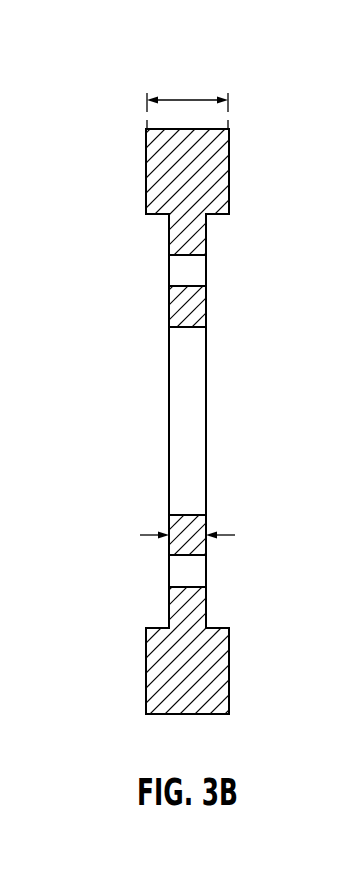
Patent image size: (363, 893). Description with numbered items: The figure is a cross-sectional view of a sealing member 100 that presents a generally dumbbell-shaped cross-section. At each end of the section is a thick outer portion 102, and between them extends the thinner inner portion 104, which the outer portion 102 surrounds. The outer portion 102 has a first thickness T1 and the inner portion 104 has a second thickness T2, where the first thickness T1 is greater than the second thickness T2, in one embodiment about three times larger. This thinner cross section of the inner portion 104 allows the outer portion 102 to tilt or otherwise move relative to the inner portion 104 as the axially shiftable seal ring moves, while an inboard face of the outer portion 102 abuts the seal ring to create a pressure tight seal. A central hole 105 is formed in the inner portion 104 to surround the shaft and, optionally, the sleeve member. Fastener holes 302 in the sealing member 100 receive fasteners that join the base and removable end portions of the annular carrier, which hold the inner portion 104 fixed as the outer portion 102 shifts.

The sealing member 100 is at (243, 252).
The outer portion 102 is at (146, 180).
The inner portion 104 is at (169, 240).
The central hole 105 is at (169, 425).
The fastener holes 302 is at (169, 270).
The first thickness T1 is at (188, 98).
The second thickness T2 is at (225, 535).